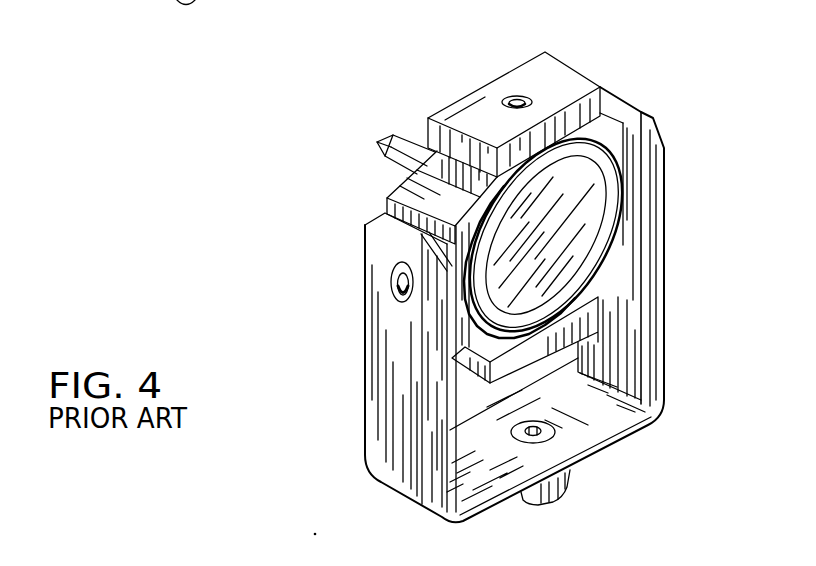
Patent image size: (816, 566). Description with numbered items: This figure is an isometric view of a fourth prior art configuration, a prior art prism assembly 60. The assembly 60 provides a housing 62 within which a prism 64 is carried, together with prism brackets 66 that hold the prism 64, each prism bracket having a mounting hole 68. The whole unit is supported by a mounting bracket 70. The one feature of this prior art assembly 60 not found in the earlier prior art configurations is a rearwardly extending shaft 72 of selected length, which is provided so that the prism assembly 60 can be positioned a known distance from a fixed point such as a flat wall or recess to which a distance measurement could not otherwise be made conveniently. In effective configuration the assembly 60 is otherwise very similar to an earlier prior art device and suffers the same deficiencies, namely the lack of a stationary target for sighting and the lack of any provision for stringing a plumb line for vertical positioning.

The prior art prism assembly 60 is at (336, 392).
The housing 62 is at (485, 140).
The prism 64 is at (580, 257).
The prism brackets 66 is at (557, 87).
The mounting hole 68 is at (518, 96).
The mounting bracket 70 is at (390, 318).
The shaft 72 is at (380, 143).